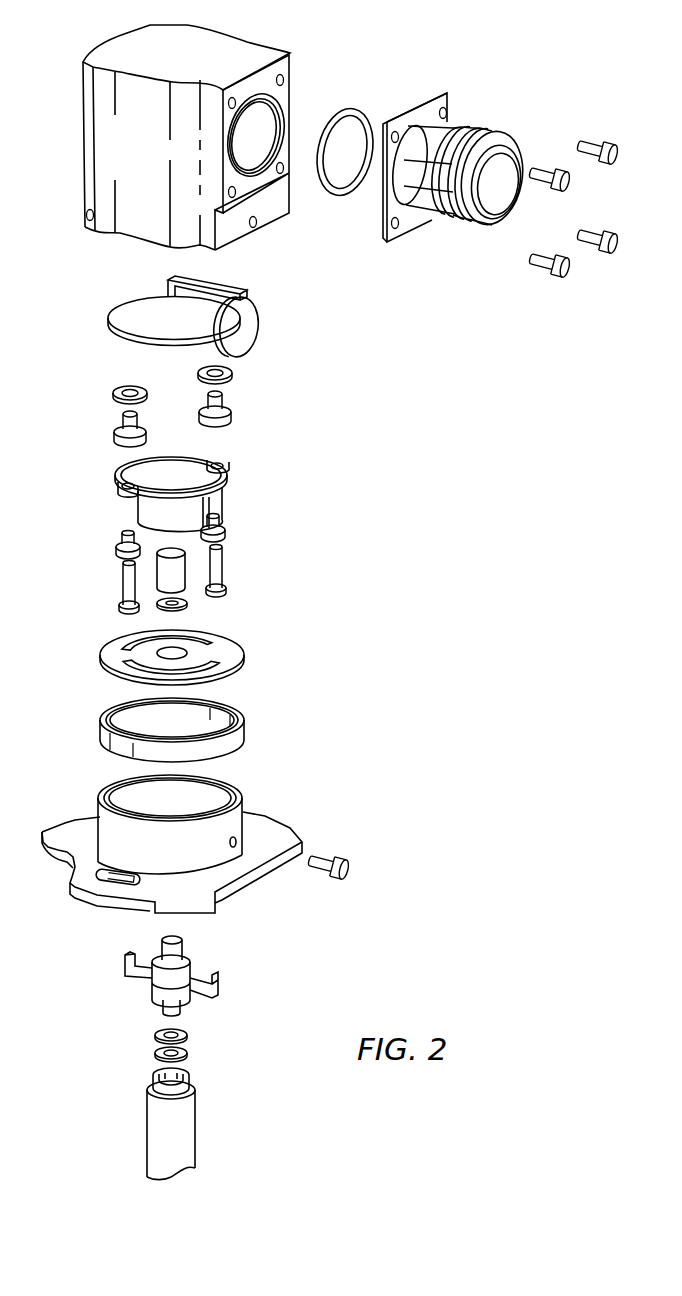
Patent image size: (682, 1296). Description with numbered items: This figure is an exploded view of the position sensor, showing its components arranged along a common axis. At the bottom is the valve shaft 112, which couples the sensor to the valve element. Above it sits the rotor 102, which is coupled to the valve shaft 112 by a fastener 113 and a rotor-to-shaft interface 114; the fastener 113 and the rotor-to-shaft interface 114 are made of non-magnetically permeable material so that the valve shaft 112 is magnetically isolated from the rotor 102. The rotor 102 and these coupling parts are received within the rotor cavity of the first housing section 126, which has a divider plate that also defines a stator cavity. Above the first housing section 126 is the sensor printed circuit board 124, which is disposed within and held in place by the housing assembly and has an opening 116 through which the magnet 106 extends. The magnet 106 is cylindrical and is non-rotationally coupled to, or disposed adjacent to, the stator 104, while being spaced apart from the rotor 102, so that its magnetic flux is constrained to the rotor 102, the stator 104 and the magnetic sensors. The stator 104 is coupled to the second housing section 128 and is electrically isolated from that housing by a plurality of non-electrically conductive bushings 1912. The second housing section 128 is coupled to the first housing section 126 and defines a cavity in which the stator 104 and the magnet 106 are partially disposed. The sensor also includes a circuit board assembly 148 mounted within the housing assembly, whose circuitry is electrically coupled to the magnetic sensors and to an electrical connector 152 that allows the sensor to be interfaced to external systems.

The second housing section 128 is at (227, 45).
The electrical connector 152 is at (501, 124).
The circuit board assembly 148 is at (135, 312).
The bushings 1912 is at (118, 440).
The stator 104 is at (240, 465).
The magnet 106 is at (190, 565).
The opening 116 is at (155, 652).
The sensor printed circuit board 124 is at (240, 667).
The first housing section 126 is at (278, 833).
The rotor 102 is at (222, 978).
The fastener 113 is at (182, 947).
The rotor-to-shaft interface 114 is at (185, 1005).
The valve shaft 112 is at (190, 1126).